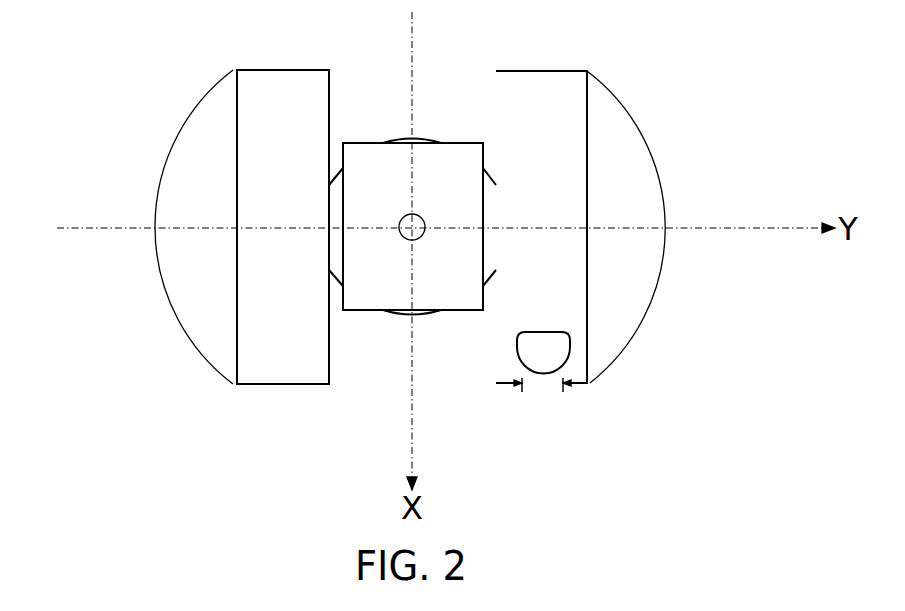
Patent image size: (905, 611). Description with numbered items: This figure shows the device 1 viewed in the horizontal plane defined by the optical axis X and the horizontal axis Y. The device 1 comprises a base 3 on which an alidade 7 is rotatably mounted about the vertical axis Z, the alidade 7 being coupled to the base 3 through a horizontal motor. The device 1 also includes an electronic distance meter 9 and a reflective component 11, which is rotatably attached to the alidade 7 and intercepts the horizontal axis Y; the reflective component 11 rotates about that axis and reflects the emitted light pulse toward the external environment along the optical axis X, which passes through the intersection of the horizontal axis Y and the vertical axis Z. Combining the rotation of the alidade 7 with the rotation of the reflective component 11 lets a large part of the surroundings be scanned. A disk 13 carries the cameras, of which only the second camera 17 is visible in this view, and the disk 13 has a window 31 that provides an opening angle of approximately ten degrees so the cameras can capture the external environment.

The device 1 is at (150, 97).
The base 3 is at (413, 209).
The alidade 7 is at (194, 227).
The electronic distance meter 9 is at (283, 227).
The reflective component 11 is at (412, 226).
The disk 13 is at (580, 227).
The second camera 17 is at (543, 353).
The window 31 is at (542, 405).